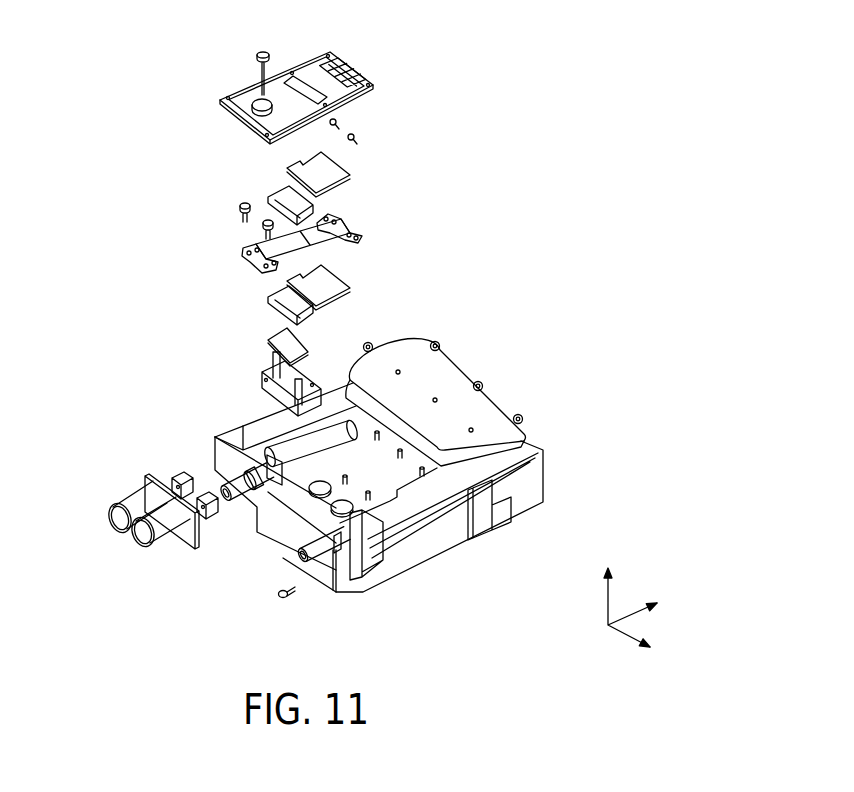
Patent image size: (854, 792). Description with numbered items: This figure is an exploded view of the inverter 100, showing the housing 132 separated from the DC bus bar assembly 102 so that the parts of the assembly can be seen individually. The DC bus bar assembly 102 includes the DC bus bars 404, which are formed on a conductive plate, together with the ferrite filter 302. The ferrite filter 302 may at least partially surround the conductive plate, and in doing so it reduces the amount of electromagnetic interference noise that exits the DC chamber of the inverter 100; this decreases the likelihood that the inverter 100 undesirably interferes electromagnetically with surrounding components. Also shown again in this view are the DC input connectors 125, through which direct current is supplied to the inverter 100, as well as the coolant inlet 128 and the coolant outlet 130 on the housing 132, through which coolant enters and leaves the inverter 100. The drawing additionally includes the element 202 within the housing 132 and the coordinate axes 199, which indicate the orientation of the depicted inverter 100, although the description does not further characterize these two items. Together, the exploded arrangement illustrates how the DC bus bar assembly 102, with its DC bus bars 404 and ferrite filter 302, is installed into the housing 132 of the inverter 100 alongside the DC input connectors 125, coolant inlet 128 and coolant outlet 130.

The inverter 100 is at (615, 268).
The DC bus bar assembly 102 is at (192, 48).
The DC input connectors 125 is at (108, 516).
The coolant inlet 128 is at (233, 500).
The coolant outlet 130 is at (298, 562).
The housing 132 is at (556, 398).
The coordinate system 199 is at (626, 598).
The cylindrical element 202 is at (284, 447).
The ferrite filter 302 is at (323, 203).
The DC bus bars 404 is at (262, 274).